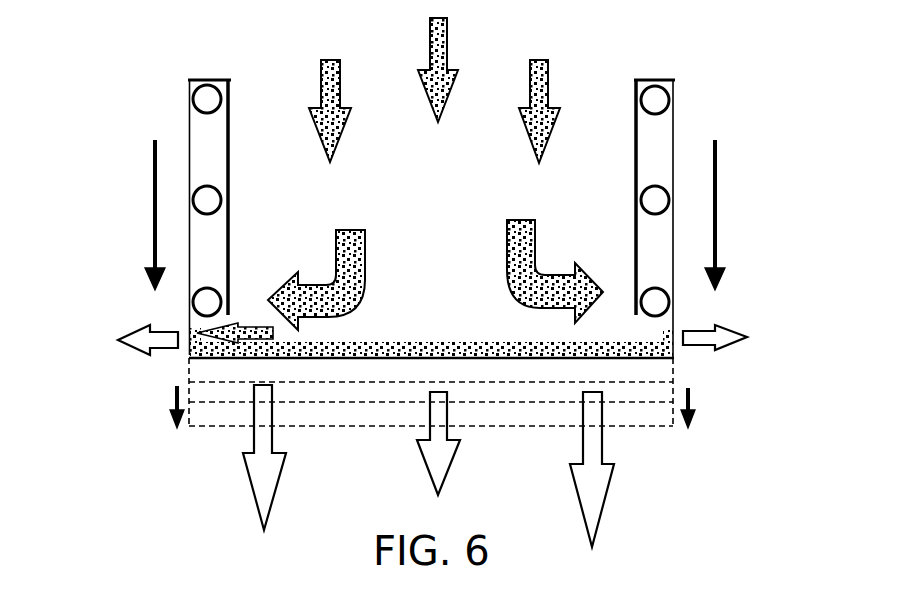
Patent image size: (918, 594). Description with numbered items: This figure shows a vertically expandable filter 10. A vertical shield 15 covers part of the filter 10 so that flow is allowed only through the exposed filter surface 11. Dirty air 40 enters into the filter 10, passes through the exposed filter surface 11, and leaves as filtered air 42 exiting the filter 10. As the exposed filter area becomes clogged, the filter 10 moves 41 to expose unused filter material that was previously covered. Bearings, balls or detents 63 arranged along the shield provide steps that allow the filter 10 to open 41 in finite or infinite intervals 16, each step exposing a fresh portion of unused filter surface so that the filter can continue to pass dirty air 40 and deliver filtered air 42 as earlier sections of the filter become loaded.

The filter 10 is at (712, 43).
The exposed filter surface 11 is at (676, 323).
The vertical shield 15 is at (633, 212).
The intervals 16 is at (226, 424).
The dirty air 40 is at (432, 48).
The movement of the filter 41 is at (152, 205).
The filtered air 42 is at (120, 338).
The bearings, balls or detents 63 is at (194, 92).